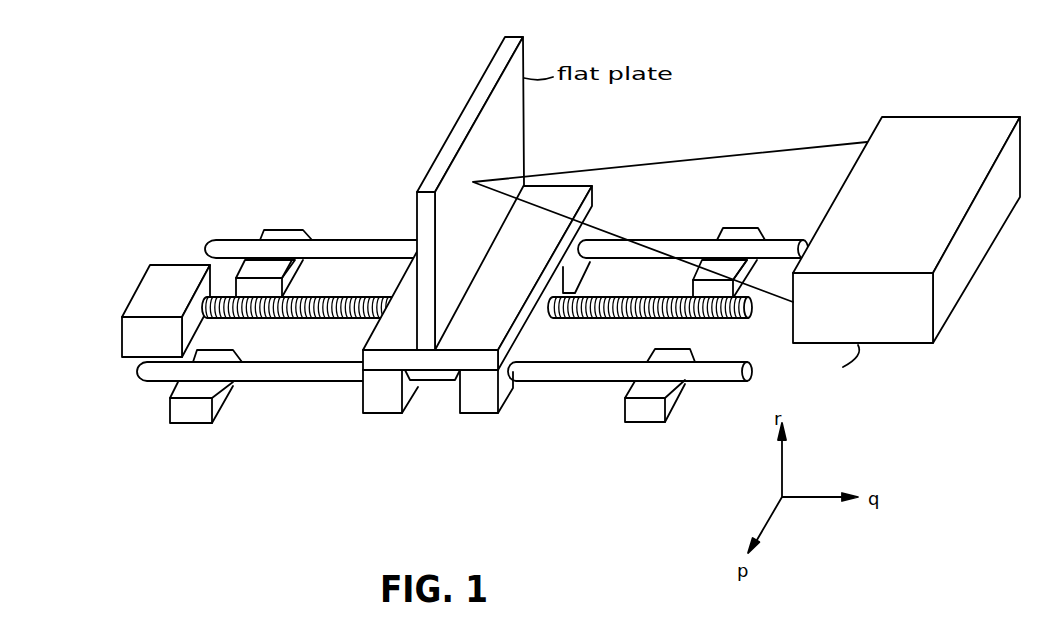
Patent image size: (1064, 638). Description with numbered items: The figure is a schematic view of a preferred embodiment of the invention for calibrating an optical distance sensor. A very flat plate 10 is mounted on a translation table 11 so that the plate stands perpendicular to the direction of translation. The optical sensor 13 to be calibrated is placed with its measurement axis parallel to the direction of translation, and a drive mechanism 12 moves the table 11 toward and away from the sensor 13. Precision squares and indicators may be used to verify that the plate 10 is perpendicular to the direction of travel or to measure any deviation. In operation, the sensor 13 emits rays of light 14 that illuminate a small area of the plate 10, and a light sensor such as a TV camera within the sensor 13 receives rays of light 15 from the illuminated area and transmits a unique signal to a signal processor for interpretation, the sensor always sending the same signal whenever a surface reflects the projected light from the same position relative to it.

The flat plate 10 is at (503, 136).
The translation table 11 is at (499, 328).
The drive mechanism 12 is at (122, 338).
The optical sensor 13 is at (978, 268).
The rays of light 14 is at (688, 160).
The rays of light 15 is at (600, 239).